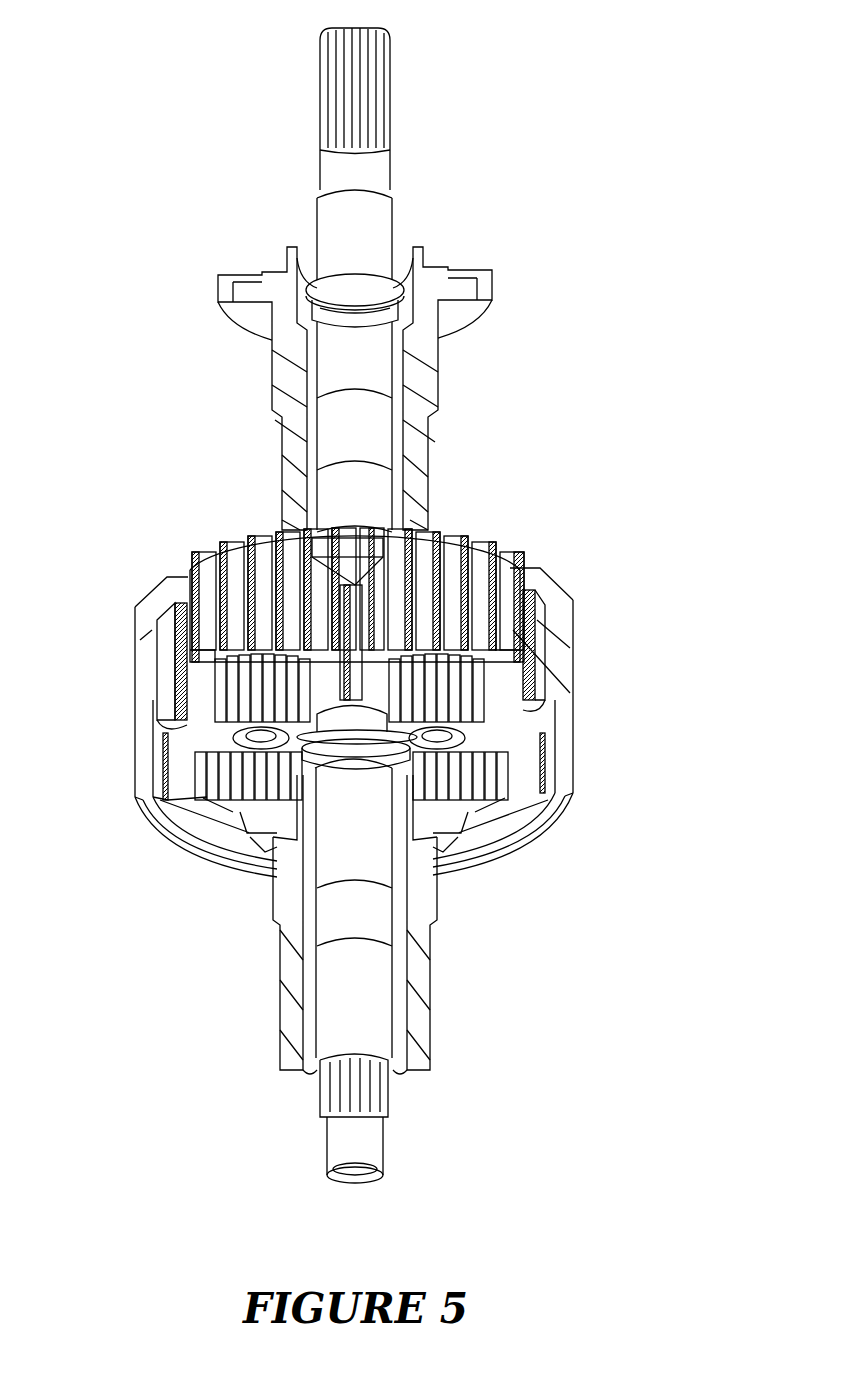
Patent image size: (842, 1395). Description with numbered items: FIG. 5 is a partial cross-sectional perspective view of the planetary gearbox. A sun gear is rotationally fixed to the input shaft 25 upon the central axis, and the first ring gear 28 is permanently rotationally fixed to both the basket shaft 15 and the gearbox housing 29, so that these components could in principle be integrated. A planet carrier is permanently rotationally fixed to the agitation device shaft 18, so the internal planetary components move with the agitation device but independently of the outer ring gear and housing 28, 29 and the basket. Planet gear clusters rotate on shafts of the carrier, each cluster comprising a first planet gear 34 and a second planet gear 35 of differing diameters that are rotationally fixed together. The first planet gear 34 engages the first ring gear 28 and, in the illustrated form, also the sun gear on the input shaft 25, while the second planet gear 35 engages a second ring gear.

The agitation device shaft 18 is at (378, 218).
The basket shaft 15 is at (427, 390).
The first planet gear 34 is at (480, 560).
The first ring gear 28 is at (167, 632).
The gearbox housing 29 is at (135, 692).
The second planet gear 35 is at (480, 710).
The input shaft 25 is at (370, 1147).